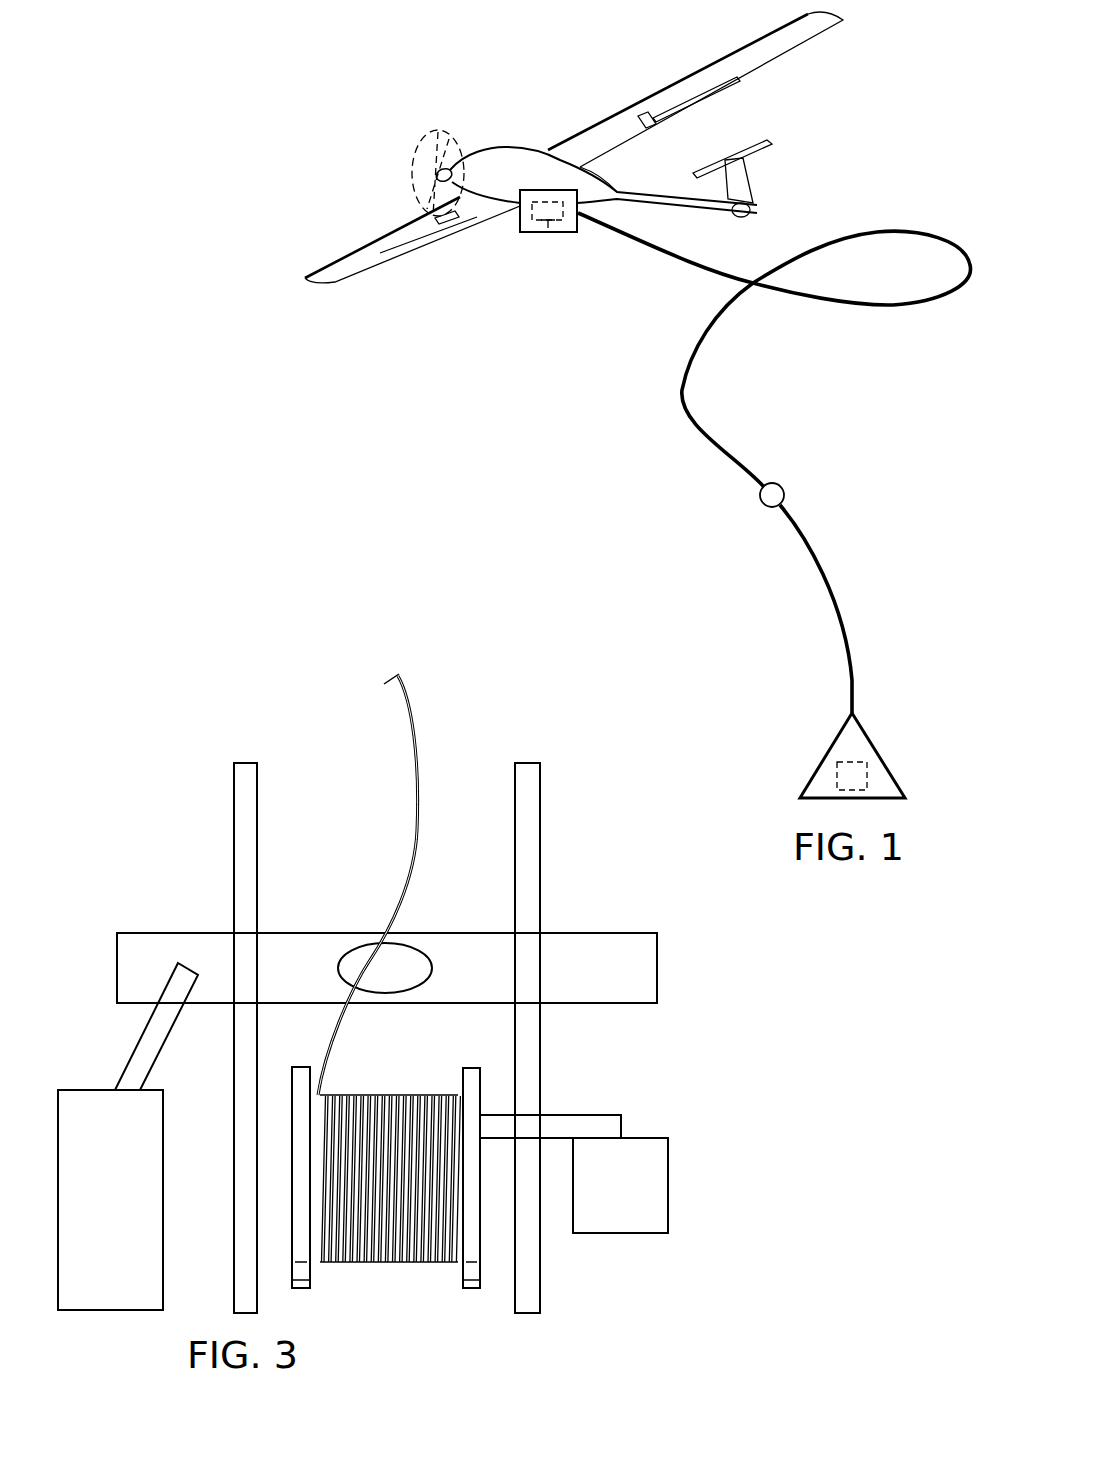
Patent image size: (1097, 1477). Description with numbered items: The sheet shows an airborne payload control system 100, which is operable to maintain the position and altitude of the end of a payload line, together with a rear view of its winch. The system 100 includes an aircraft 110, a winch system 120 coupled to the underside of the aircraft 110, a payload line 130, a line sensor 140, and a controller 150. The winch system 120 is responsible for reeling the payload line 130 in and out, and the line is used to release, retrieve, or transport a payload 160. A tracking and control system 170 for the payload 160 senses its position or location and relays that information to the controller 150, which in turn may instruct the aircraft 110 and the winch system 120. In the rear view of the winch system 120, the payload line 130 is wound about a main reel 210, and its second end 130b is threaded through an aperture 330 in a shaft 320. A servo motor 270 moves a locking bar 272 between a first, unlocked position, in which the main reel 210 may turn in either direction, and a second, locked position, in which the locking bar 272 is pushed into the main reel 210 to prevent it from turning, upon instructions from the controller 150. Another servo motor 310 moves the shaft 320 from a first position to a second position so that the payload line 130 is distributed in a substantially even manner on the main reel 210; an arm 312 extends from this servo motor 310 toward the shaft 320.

In FIG. 1, the airborne payload control system 100 is at (376, 94).
In FIG. 1, the aircraft 110 is at (350, 250).
In FIG. 1, the winch system 120 is at (533, 235).
In FIG. 3, the winch system 120 is at (190, 708).
In FIG. 1, the payload line 130 is at (880, 230).
In FIG. 3, the payload line 130 is at (461, 1291).
In FIG. 3, the second end of payload line 130b is at (412, 718).
In FIG. 1, the line sensor 140 is at (783, 488).
In FIG. 1, the controller 150 is at (557, 235).
In FIG. 1, the payload 160 is at (827, 752).
In FIG. 1, the tracking and control system 170 is at (867, 776).
In FIG. 3, the main reel 210 is at (482, 1270).
In FIG. 3, the servo motor 270 is at (668, 1183).
In FIG. 3, the locking bar 272 is at (598, 1113).
In FIG. 3, the servo motor 310 is at (110, 1312).
In FIG. 3, the actuator arm 312 is at (130, 1055).
In FIG. 3, the shaft 320 is at (315, 933).
In FIG. 3, the aperture 330 is at (420, 947).